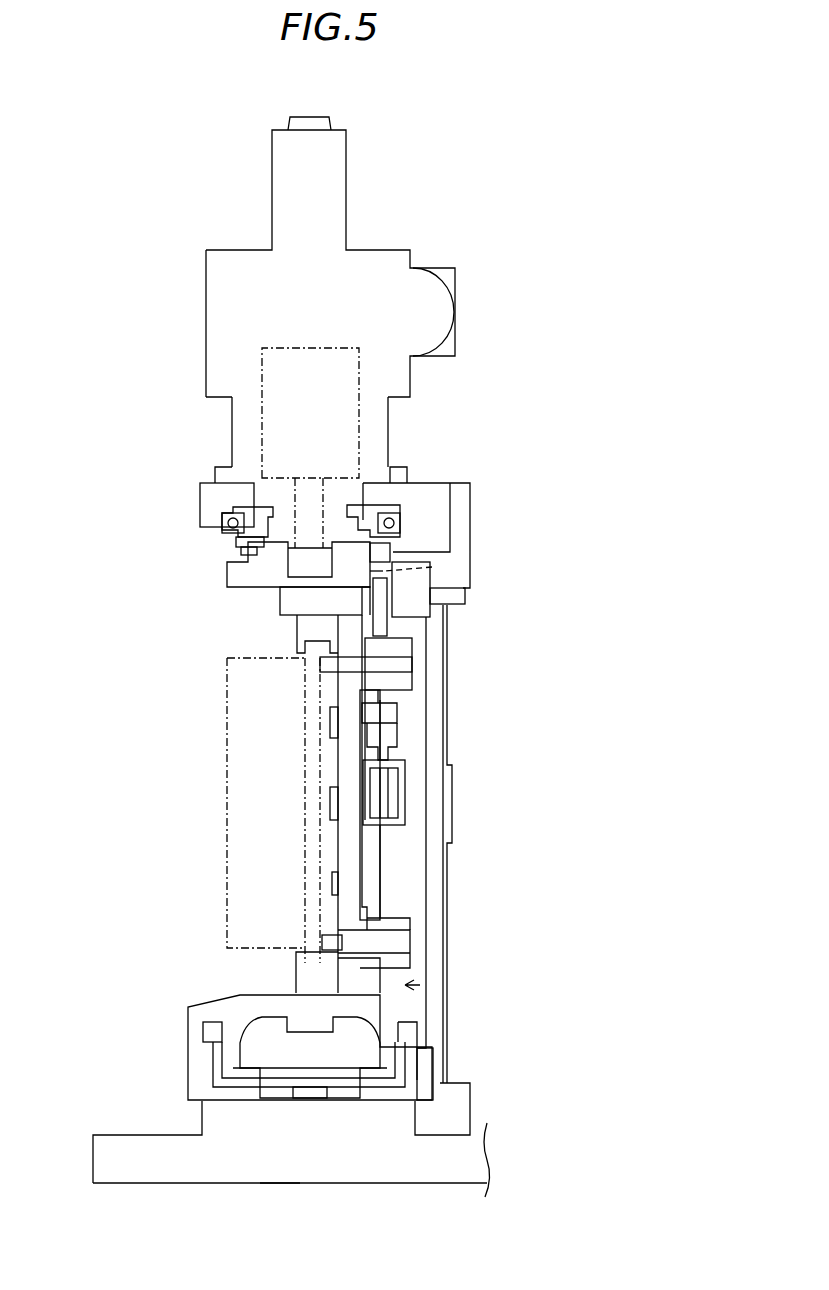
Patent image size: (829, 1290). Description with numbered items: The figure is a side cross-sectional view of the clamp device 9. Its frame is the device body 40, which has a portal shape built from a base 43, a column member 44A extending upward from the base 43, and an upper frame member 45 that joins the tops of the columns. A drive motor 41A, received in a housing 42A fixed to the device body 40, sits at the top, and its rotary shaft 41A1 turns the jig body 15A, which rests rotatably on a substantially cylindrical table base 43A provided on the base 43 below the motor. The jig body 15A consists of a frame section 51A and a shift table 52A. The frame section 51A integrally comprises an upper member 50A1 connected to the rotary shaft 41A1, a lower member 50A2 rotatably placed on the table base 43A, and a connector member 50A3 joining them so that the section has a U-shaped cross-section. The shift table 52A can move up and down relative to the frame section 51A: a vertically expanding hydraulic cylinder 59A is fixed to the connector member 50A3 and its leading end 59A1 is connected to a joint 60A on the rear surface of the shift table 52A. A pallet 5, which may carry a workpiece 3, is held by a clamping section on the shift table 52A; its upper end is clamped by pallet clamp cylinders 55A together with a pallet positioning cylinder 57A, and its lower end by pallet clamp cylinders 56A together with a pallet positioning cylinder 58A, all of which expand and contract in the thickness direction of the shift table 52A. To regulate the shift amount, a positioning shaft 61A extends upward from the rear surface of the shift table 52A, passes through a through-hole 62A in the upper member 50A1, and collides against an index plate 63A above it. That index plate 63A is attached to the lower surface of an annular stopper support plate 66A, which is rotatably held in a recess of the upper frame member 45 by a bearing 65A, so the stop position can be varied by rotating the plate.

The clamp device 9 is at (163, 131).
The housing 42A is at (388, 260).
The drive motor 41A is at (360, 443).
The upper frame member 45 is at (430, 490).
The stopper support plate 66A is at (242, 510).
The bearing 65A is at (400, 521).
The index plate 63A is at (381, 553).
The rotary shaft 41A1 is at (432, 566).
The upper member 50A1 is at (240, 577).
The through-hole 62A is at (432, 575).
The positioning shaft 61A is at (440, 607).
The pallet clamp cylinder 55A is at (293, 627).
The pallet positioning cylinder 57A is at (322, 663).
The pallet 5 is at (303, 855).
The workpiece region 3 is at (228, 818).
The shift table 52A is at (347, 780).
The jig body 15A is at (357, 762).
The joint 60A is at (385, 702).
The leading end 59A1 is at (393, 727).
The hydraulic cylinder 59A is at (405, 812).
The connector member 50A3 is at (410, 873).
The column member 44A is at (438, 927).
The pallet positioning cylinder 58A is at (353, 945).
The pallet clamp cylinder 56A is at (303, 977).
The frame section 51A is at (420, 985).
The lower member 50A2 is at (385, 1015).
The table base 43A is at (422, 1062).
The device body 40 is at (132, 1128).
The base 43 is at (281, 1173).